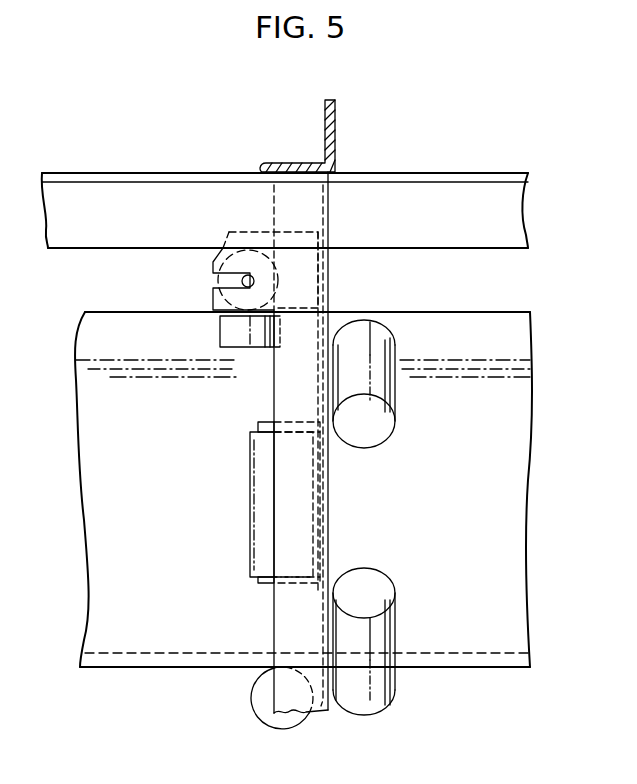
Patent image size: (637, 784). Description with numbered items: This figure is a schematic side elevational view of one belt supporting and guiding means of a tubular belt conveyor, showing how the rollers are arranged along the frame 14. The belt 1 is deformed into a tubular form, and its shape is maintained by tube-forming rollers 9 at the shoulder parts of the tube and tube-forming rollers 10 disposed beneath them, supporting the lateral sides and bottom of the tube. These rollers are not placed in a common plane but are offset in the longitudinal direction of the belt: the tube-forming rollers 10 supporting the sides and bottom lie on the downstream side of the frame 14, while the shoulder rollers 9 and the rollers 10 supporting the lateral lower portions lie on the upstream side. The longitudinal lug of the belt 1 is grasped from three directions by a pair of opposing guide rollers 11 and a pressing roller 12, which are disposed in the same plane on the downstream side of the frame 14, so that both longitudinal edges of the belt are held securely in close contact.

The belt 1 is at (462, 308).
The tube-forming rollers 9 is at (396, 398).
The tube-forming rollers 10 is at (256, 470).
The guide rollers 11 is at (222, 334).
The pressing roller 12 is at (213, 280).
The frame 14 is at (316, 332).